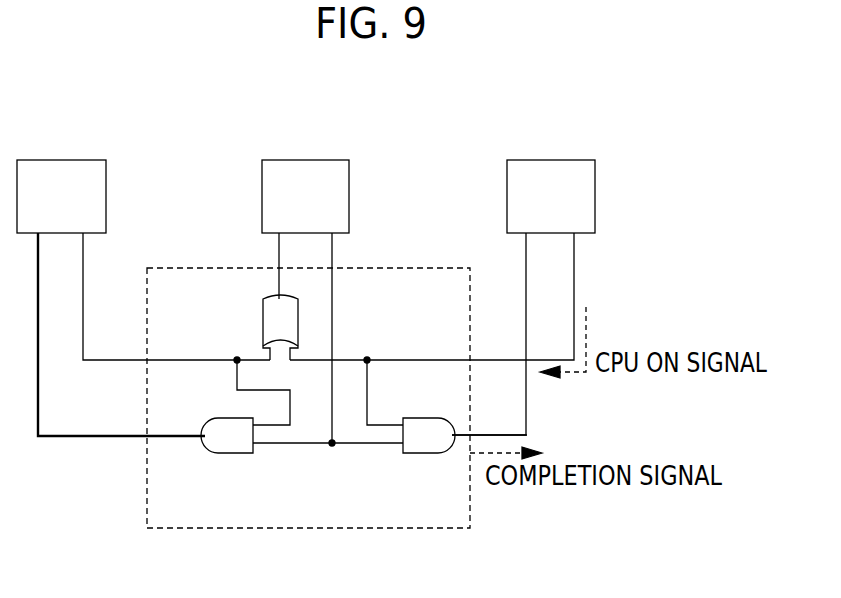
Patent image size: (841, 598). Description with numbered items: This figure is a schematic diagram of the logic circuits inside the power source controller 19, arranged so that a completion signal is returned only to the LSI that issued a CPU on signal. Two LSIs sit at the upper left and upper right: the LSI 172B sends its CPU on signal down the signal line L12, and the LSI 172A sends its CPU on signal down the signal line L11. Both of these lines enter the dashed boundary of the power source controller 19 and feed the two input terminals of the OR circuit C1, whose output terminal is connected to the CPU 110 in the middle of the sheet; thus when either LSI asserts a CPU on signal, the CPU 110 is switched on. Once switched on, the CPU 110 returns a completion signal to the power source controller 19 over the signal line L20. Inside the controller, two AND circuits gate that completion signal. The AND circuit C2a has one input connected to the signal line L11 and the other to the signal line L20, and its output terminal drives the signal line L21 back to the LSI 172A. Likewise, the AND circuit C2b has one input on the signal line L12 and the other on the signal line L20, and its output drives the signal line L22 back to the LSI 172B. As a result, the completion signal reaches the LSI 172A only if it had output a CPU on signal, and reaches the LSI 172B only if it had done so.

The LSI 172B is at (61, 160).
The CPU 110 is at (305, 160).
The LSI 172A is at (549, 160).
The power source controller 19 is at (312, 529).
The signal line L22 is at (39, 412).
The signal line L12 is at (83, 263).
The signal line L21 is at (525, 271).
The signal line L11 is at (575, 273).
The signal line L20 is at (331, 313).
The OR circuit C1 is at (263, 325).
The AND circuit C2b is at (206, 431).
The AND circuit C2a is at (423, 418).